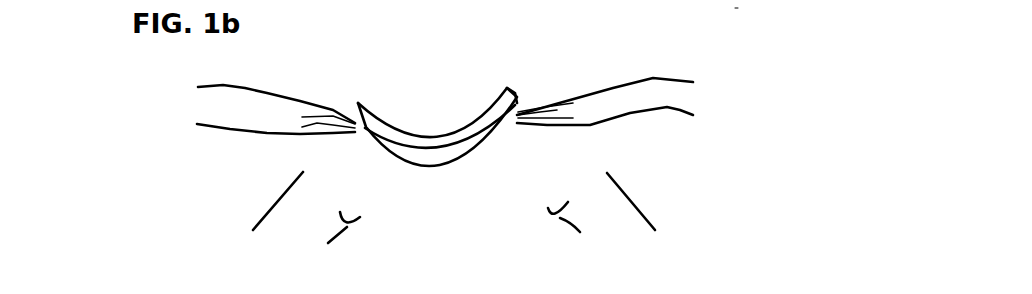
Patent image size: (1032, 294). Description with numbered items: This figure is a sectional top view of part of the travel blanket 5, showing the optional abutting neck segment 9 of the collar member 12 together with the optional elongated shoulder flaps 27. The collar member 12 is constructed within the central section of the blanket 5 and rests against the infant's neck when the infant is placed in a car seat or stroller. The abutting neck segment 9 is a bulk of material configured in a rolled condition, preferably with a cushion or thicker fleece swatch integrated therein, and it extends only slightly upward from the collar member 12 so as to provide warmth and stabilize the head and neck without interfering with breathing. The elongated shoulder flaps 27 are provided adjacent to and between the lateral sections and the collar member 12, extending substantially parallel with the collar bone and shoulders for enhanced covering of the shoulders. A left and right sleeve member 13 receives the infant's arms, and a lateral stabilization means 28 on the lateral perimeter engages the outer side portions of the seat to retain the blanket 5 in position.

The collar member 12 is at (438, 135).
The abutting neck segment 9 is at (557, 56).
The elongated shoulder flaps 27 is at (461, 106).
The sleeve member 13 is at (690, 178).
The travel blanket 5 is at (470, 220).
The lateral stabilization means 28 is at (718, 11).